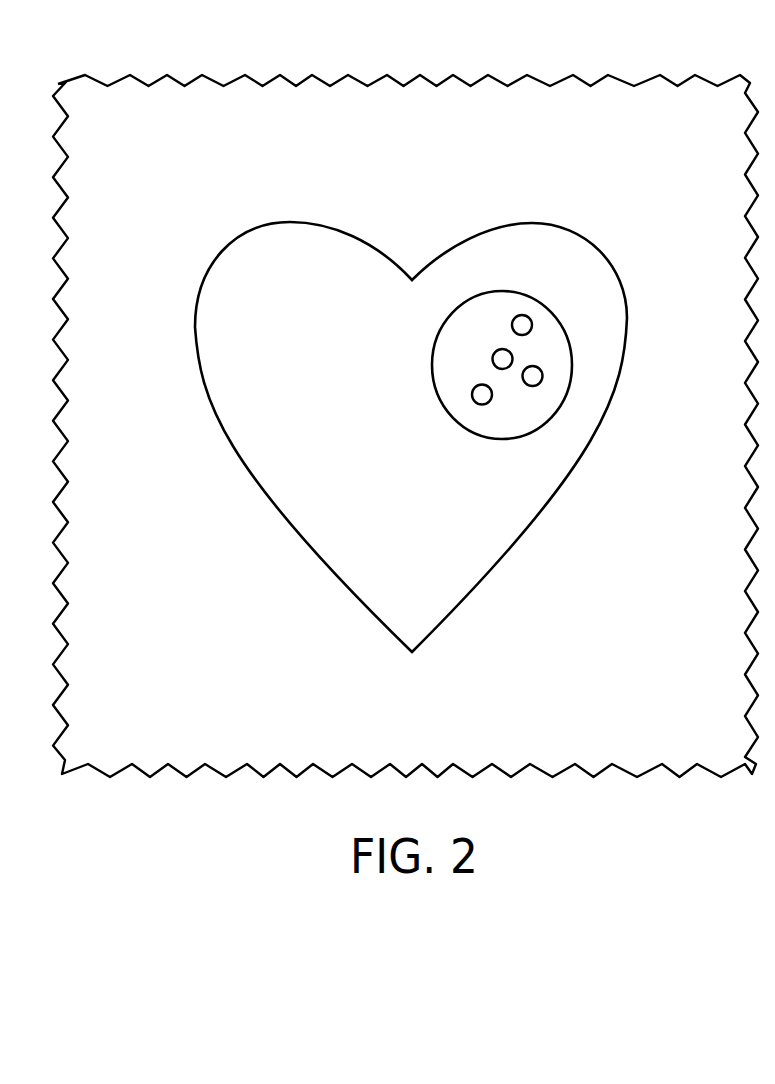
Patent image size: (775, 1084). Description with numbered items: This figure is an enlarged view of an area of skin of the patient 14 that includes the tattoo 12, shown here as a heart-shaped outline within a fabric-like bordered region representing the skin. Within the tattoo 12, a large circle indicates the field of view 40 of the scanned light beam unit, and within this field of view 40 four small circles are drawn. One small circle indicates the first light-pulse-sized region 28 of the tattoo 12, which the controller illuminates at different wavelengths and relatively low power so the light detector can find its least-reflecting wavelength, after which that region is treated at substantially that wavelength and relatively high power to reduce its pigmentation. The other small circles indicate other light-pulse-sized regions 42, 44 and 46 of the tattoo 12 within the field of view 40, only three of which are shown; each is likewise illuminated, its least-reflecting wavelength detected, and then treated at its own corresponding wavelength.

The patient 14 is at (172, 162).
The tattoo 12 is at (288, 294).
The field of view 40 is at (432, 380).
The other light-pulse-sized region 42 is at (497, 351).
The other light-pulse-sized region 44 is at (522, 315).
The other light-pulse-sized region 46 is at (543, 375).
The first light-pulse-sized region 28 is at (491, 402).